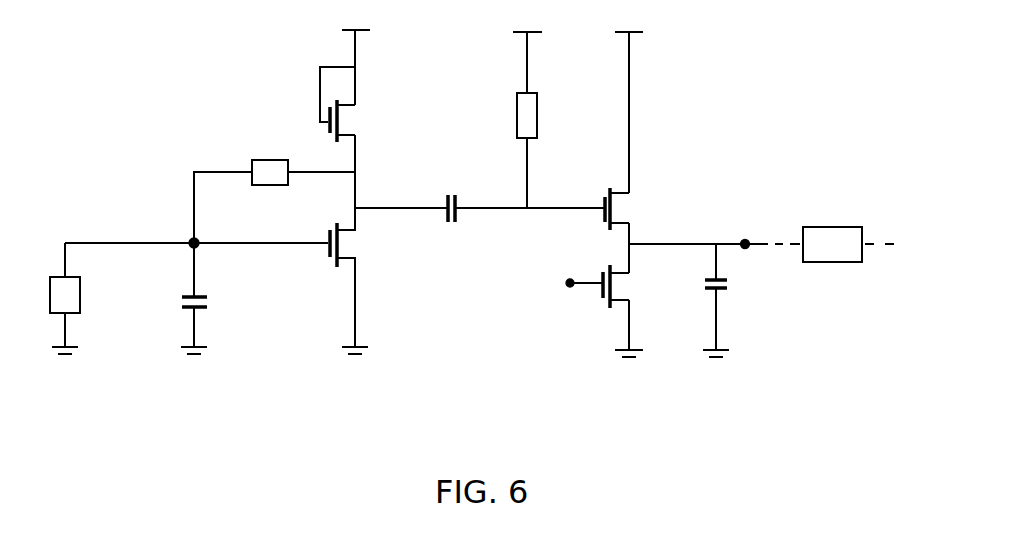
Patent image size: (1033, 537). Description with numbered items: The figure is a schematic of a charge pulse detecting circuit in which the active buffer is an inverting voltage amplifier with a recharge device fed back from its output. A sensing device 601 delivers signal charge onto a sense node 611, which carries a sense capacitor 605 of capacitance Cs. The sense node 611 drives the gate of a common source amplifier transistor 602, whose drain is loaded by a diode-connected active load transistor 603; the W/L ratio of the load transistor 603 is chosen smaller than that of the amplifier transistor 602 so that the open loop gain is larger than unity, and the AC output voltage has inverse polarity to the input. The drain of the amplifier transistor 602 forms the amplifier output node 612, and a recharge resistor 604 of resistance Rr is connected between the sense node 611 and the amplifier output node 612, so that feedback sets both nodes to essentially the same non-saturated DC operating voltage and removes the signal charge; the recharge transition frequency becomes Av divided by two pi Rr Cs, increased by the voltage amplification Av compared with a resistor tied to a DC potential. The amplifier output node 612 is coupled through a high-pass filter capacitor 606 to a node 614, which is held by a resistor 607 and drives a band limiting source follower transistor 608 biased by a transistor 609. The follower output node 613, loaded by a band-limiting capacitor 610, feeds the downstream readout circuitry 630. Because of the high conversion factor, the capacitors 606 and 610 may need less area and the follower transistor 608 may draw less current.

The sensing device 601 is at (47, 298).
The common source amplifier transistor 602 is at (290, 281).
The active load transistor 603 is at (353, 119).
The recharge resistor 604 is at (274, 201).
The sense capacitor 605 is at (206, 296).
The high-pass filter capacitor 606 is at (470, 214).
The high-pass resistor Rhp 607 is at (512, 120).
The band limiting source follower transistor 608 is at (632, 138).
The current source transistor 609 is at (611, 300).
The band-limiting capacitor 610 is at (727, 300).
The sense node 611 is at (129, 232).
The amplifier output node 612 is at (401, 197).
The output node 613 is at (689, 235).
The high-pass filter node 614 is at (530, 197).
The downstream readout circuitry 630 is at (819, 244).